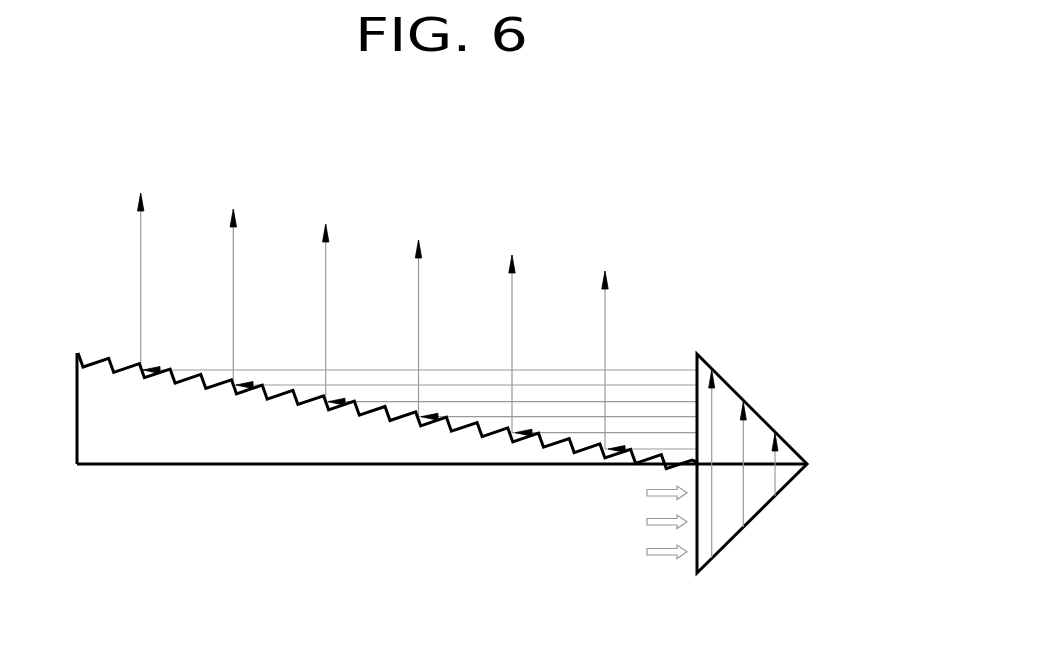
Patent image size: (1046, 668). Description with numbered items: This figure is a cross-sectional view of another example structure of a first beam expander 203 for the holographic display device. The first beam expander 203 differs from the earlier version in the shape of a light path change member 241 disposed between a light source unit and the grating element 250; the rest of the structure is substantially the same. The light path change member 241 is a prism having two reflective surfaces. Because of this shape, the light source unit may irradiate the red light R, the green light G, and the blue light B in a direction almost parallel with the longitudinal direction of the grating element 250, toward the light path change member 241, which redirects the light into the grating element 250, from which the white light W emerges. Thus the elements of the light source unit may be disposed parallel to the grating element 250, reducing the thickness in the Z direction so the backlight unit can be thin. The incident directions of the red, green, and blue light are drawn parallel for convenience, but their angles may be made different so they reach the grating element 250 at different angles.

The first beam expander 203 is at (698, 226).
The light path change member 241 is at (737, 392).
The grating element 250 is at (206, 453).